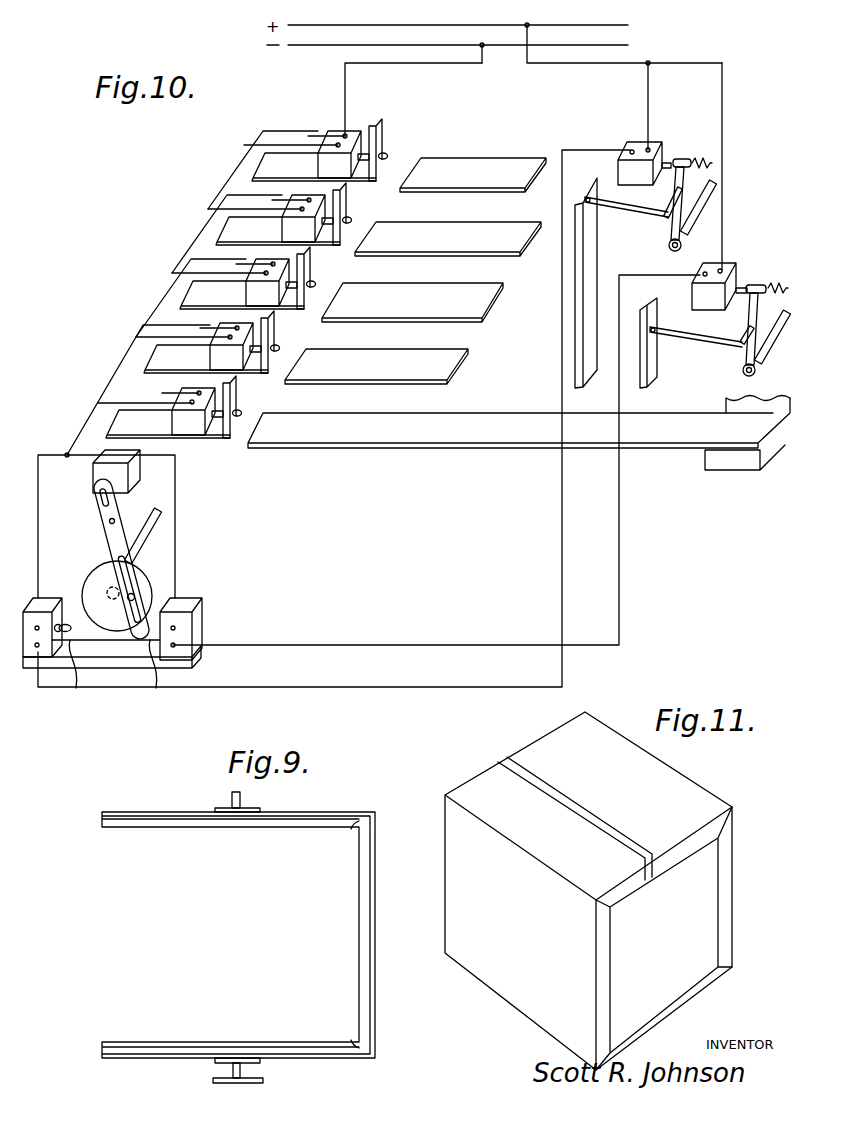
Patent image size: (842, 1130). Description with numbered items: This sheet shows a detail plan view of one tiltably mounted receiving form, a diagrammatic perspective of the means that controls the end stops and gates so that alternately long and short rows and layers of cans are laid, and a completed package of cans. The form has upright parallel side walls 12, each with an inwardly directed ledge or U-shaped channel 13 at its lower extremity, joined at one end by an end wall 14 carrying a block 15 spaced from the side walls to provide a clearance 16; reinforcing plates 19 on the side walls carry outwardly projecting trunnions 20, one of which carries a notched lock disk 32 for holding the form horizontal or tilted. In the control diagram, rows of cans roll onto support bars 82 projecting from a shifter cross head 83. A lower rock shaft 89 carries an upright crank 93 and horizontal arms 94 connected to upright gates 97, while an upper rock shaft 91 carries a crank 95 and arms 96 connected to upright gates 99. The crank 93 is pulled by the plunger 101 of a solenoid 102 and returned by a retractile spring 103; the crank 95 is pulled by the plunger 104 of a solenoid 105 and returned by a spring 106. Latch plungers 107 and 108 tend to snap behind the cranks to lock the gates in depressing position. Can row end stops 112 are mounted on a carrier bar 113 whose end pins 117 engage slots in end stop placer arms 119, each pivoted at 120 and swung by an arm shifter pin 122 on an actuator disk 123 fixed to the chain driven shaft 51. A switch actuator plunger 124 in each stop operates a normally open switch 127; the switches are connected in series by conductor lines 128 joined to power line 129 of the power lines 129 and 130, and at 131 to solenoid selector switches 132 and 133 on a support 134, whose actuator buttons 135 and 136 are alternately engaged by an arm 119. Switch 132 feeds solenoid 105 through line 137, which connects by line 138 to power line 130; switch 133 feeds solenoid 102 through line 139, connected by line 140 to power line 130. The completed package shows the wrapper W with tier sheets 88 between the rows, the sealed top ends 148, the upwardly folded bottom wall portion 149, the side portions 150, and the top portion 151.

In FIG. 10, the power line 129 is at (328, 46).
In FIG. 10, the power line 130 is at (622, 25).
In FIG. 10, the conductor lines 128 is at (421, 63).
In FIG. 10, the line 138 is at (645, 92).
In FIG. 10, the line 140 is at (724, 104).
In FIG. 10, the carrier bar 113 is at (190, 256).
In FIG. 10, the normally open switch 127 is at (348, 130).
In FIG. 10, the can row end stop 112 is at (379, 128).
In FIG. 10, the switch actuator plunger 124 is at (389, 155).
In FIG. 10, the support bars 82 is at (497, 160).
In FIG. 10, the shifter cross head 83 is at (718, 462).
In FIG. 10, the line 137 is at (598, 148).
In FIG. 10, the line 139 is at (667, 276).
In FIG. 10, the solenoid 105 is at (656, 140).
In FIG. 10, the plunger 104 is at (669, 163).
In FIG. 10, the crank 95 is at (692, 181).
In FIG. 10, the retractile spring 106 is at (712, 160).
In FIG. 10, the upper rock shaft 91 is at (717, 187).
In FIG. 10, the latch plunger 108 is at (666, 222).
In FIG. 10, the horizontal arms 96 is at (628, 208).
In FIG. 10, the upright gates 99 is at (577, 330).
In FIG. 10, the solenoid 102 is at (729, 263).
In FIG. 10, the plunger 101 is at (743, 285).
In FIG. 10, the crank 93 is at (786, 316).
In FIG. 10, the retractile spring 103 is at (789, 278).
In FIG. 10, the lower rock shaft 89 is at (771, 339).
In FIG. 10, the latch plunger 107 is at (742, 350).
In FIG. 10, the horizontal arms 94 is at (698, 339).
In FIG. 10, the upright gates 97 is at (650, 372).
In FIG. 10, the connection 131 is at (38, 460).
In FIG. 10, the pin 117 is at (96, 487).
In FIG. 10, the chain driven shaft 51 is at (166, 530).
In FIG. 10, the actuator disk 123 is at (88, 582).
In FIG. 10, the end stop placer arm 119 is at (97, 545).
In FIG. 10, the pivot 120 is at (109, 521).
In FIG. 10, the arm shifter pin 122 is at (136, 596).
In FIG. 10, the solenoid selector switch 132 is at (33, 660).
In FIG. 10, the solenoid selector switch 133 is at (198, 618).
In FIG. 10, the support 134 is at (127, 670).
In FIG. 10, the actuator button 135 is at (76, 666).
In FIG. 10, the actuator button 136 is at (168, 673).
In FIG. 9, the end wall 14 is at (378, 930).
In FIG. 9, the block 15 is at (367, 886).
In FIG. 9, the U-shaped channel 13 is at (153, 821).
In FIG. 9, the clearance 16 is at (352, 820).
In FIG. 9, the side walls 12 is at (317, 809).
In FIG. 9, the reinforcing plates 19 is at (215, 807).
In FIG. 9, the trunnions 20 is at (241, 795).
In FIG. 9, the lock disk 32 is at (252, 1084).
In FIG. 11, the wrapper W is at (687, 783).
In FIG. 11, the side portions 150 is at (733, 866).
In FIG. 11, the tier sheets 88 is at (708, 910).
In FIG. 11, the sealed wrapper ends 148 is at (590, 828).
In FIG. 11, the top portion 151 is at (668, 855).
In FIG. 11, the bottom wall portion 149 is at (680, 992).